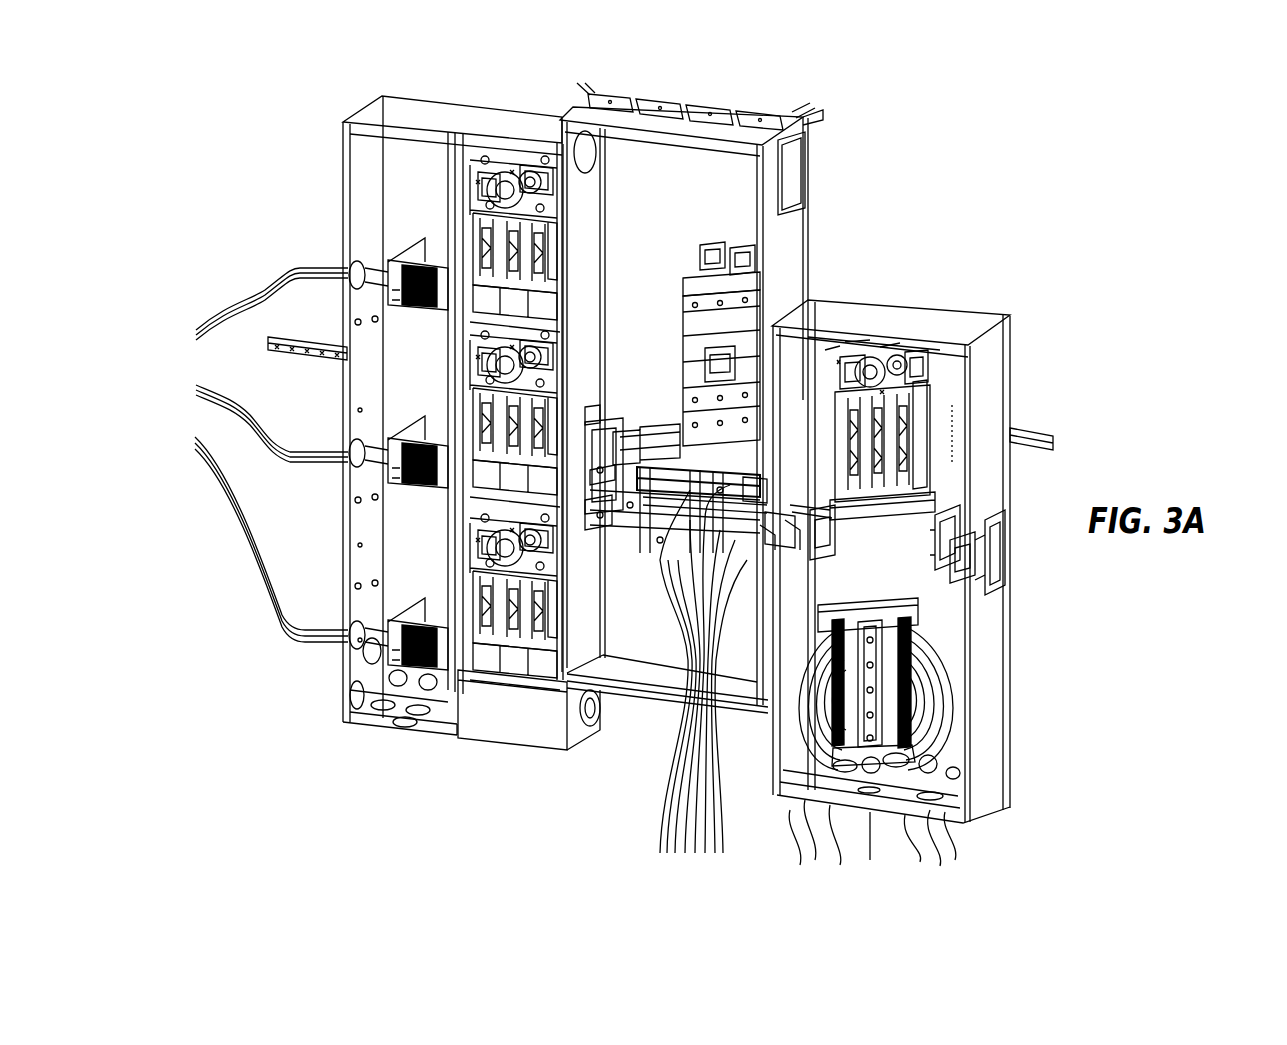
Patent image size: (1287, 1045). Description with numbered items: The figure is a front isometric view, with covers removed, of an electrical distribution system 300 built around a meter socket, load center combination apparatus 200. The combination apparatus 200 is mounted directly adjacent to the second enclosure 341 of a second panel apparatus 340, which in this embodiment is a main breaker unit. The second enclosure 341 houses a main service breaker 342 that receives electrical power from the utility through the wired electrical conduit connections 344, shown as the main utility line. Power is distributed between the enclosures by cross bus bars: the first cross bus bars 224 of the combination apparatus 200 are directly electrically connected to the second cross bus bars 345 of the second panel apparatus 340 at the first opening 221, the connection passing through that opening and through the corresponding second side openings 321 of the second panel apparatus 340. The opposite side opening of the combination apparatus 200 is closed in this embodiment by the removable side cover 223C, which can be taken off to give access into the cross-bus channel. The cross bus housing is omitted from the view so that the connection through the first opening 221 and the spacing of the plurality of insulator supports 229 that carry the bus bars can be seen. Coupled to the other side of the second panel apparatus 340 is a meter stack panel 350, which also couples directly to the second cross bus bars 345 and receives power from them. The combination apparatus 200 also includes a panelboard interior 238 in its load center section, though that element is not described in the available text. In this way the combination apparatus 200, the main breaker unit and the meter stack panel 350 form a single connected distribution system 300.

The electrical distribution system 300 is at (945, 133).
The meter stack panel 350 is at (487, 100).
The second panel apparatus 340 is at (718, 92).
The second enclosure 341 is at (645, 125).
The main service breaker 342 is at (688, 305).
The second cross bus bars 345 is at (668, 512).
The second side openings 321 is at (612, 530).
The wired electrical conduit connections 344 is at (720, 790).
The meter socket, load center combination apparatus 200 is at (920, 305).
The first opening 221 is at (790, 480).
The insulator supports 229 is at (960, 570).
The first cross bus bars 224 is at (942, 530).
The removable side cover 223C is at (998, 562).
The panelboard interior 238 is at (945, 615).